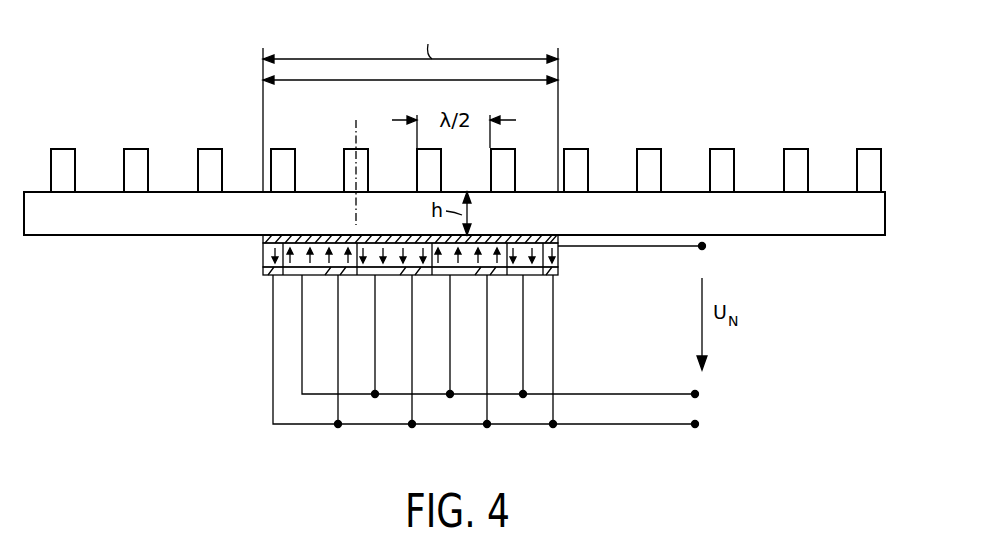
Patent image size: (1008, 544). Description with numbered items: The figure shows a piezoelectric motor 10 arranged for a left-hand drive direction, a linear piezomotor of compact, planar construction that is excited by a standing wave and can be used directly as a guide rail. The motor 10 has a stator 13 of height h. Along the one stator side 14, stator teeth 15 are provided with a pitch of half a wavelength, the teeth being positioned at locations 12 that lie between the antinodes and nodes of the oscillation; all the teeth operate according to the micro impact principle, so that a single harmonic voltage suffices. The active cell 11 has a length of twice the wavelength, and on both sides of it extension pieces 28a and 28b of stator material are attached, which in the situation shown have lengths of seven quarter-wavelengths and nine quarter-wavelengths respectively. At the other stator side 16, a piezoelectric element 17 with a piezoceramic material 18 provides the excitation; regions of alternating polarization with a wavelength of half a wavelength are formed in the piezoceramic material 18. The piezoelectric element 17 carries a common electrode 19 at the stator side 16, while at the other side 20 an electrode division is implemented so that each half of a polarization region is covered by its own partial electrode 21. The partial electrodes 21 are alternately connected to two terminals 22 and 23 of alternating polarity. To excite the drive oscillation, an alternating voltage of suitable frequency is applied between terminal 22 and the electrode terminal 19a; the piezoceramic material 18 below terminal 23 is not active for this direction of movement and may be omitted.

The piezoelectric motor 10 is at (886, 218).
The active cell 11 is at (338, 80).
The tooth locations 12 is at (357, 126).
The stator 13 is at (533, 197).
The stator side 14 is at (322, 190).
The stator teeth 15 is at (211, 154).
The other stator side 16 is at (318, 237).
The piezoelectric element 17 is at (560, 272).
The piezoceramic material 18 is at (560, 250).
The common electrode 19 is at (524, 237).
The electrode terminal 19a is at (666, 247).
The other side 20 is at (262, 243).
The partial electrodes 21 is at (330, 276).
The terminal 22 is at (620, 394).
The terminal 23 is at (620, 425).
The extension piece 28a is at (68, 224).
The extension piece 28b is at (862, 228).